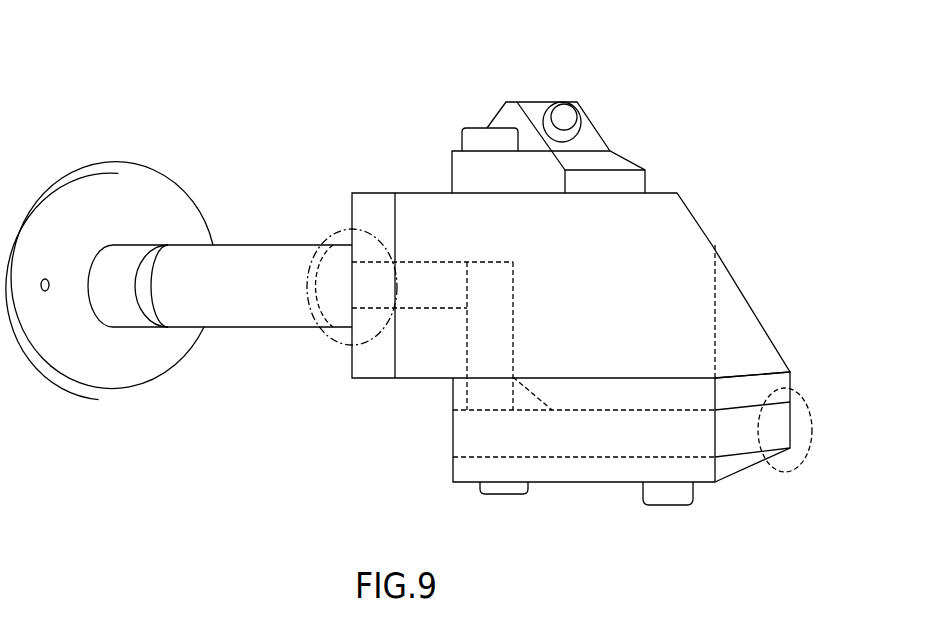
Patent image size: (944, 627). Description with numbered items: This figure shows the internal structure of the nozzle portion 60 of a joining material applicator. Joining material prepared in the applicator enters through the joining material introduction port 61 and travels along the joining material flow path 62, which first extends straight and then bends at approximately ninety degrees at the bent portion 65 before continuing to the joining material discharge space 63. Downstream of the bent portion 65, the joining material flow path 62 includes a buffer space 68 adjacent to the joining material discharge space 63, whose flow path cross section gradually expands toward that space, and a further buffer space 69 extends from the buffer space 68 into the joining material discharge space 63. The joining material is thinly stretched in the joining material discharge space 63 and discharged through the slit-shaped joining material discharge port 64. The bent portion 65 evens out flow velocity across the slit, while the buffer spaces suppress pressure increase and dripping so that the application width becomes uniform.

The nozzle portion 60 is at (392, 100).
The joining material introduction port 61 is at (352, 230).
The joining material flow path 62 is at (513, 352).
The joining material discharge space 63 is at (533, 441).
The joining material discharge port 64 is at (797, 472).
The bent portion 65 is at (500, 275).
The buffer space 68 is at (522, 397).
The buffer space 69 is at (453, 431).